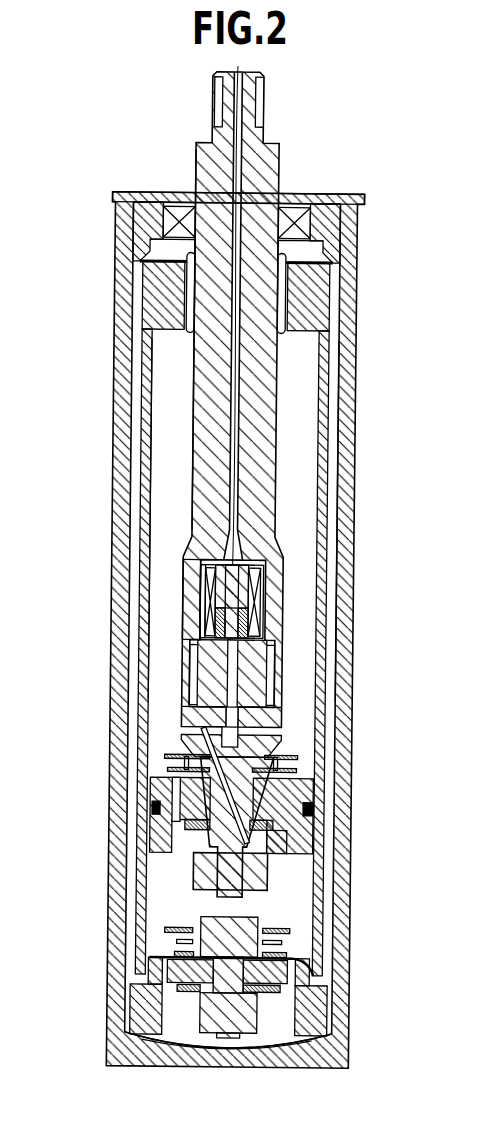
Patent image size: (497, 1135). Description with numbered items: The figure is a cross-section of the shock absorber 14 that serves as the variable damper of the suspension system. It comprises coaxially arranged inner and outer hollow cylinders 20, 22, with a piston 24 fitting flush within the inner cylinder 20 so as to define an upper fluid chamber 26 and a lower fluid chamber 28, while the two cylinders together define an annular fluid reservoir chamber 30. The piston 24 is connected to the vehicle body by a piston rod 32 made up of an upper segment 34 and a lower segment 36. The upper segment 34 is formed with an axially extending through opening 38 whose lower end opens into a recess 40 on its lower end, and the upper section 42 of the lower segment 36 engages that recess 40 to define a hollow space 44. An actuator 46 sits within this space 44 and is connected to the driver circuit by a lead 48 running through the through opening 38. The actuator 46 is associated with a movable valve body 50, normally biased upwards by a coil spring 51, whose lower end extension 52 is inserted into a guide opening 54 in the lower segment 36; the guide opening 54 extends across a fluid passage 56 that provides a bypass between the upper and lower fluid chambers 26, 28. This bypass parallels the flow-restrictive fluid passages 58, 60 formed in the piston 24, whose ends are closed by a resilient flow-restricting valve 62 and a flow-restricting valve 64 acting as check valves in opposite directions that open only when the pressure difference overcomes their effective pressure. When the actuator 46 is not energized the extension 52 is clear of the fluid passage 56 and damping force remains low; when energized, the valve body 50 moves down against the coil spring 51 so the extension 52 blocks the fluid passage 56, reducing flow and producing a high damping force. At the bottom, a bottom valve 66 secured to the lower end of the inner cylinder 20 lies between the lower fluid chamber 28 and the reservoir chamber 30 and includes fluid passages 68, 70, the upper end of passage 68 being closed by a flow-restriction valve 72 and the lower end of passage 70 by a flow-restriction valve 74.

The shock absorber 14 is at (108, 238).
The inner hollow cylinder 20 is at (328, 447).
The outer hollow cylinder 22 is at (358, 349).
The piston 24 is at (313, 792).
The upper fluid chamber 26 is at (161, 510).
The lower fluid chamber 28 is at (164, 892).
The annular fluid reservoir chamber 30 is at (336, 537).
The piston rod 32 is at (254, 495).
The upper segment 34 is at (200, 467).
The lower segment 36 is at (186, 717).
The through opening 38 is at (240, 412).
The recess 40 is at (272, 690).
The upper section 42 is at (265, 673).
The hollow space 44 is at (264, 608).
The actuator 46 is at (209, 607).
The lead 48 is at (238, 246).
The movable valve body 50 is at (232, 675).
The coil spring 51 is at (187, 627).
The lower end extension 52 is at (238, 707).
The guide opening 54 is at (205, 732).
The fluid passage 56 is at (192, 843).
The flow-restrictive fluid passage 58 is at (178, 792).
The flow-restrictive fluid passage 60 is at (279, 815).
The resilient flow-restricting valve 62 is at (170, 767).
The flow-restricting valve 64 is at (296, 840).
The bottom valve 66 is at (206, 1003).
The fluid passage 68 is at (173, 972).
The fluid passage 70 is at (278, 965).
The flow-restriction valve 72 is at (175, 953).
The flow-restriction valve 74 is at (278, 990).